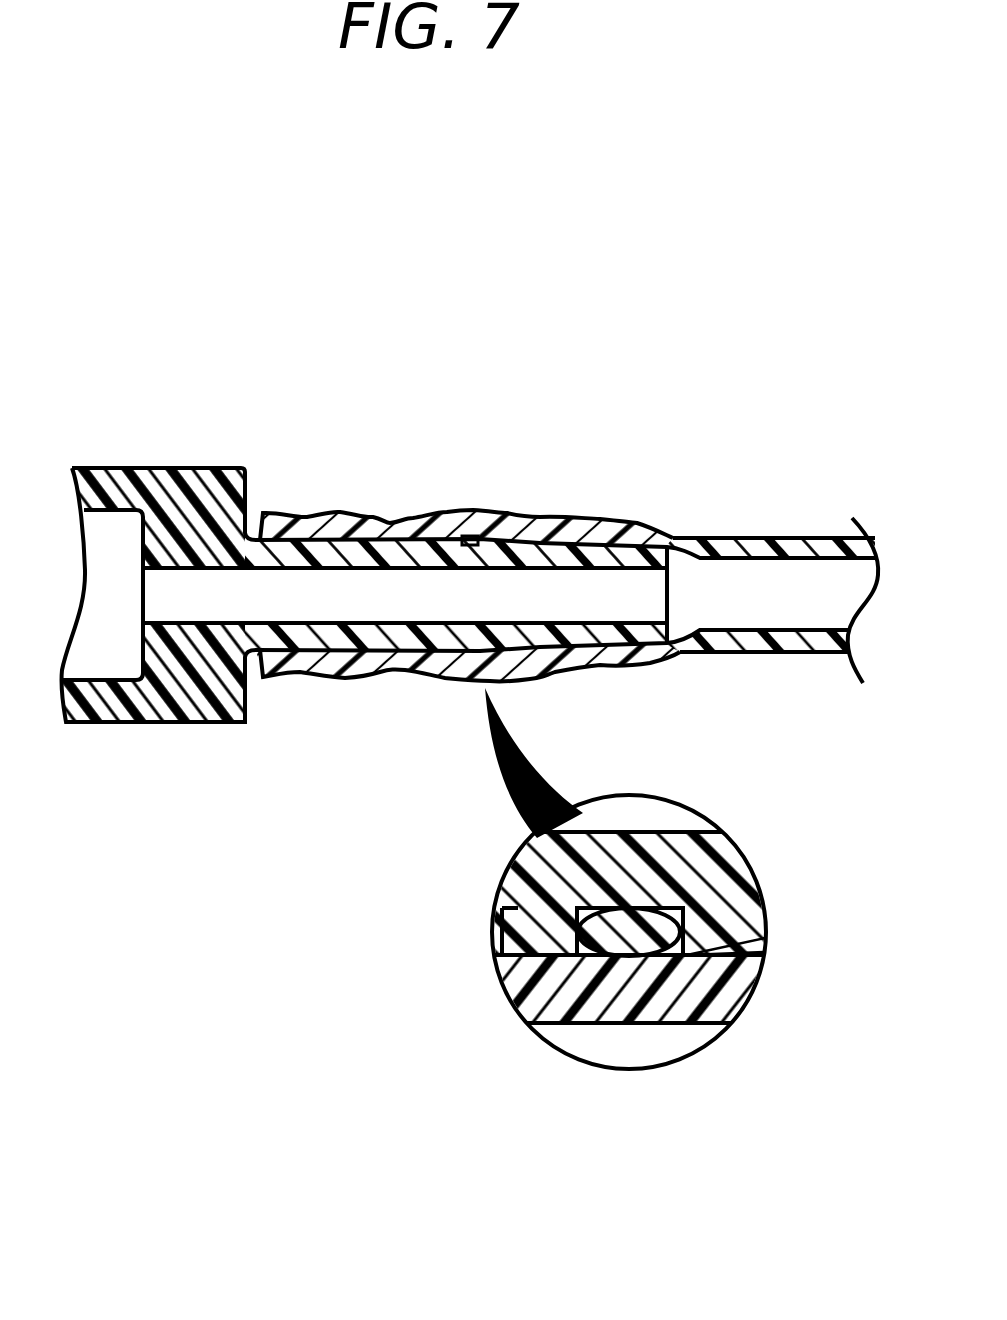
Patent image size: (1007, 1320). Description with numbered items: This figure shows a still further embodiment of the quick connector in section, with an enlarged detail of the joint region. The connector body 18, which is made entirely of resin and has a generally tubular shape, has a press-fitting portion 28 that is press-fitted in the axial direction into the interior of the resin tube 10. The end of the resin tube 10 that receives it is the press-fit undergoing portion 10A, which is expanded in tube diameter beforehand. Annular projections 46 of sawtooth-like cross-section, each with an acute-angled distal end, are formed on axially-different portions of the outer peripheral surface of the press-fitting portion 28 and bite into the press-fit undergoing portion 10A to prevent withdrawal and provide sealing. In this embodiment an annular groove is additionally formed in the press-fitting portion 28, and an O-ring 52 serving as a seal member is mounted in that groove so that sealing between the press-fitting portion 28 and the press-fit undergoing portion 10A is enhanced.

The connector body 18 is at (140, 467).
The resin tube 10 is at (730, 538).
The annular projections 46 is at (443, 537).
The O-ring 52 is at (472, 535).
The press-fitting portion 28 is at (543, 654).
The press-fit undergoing portion 10A is at (398, 667).